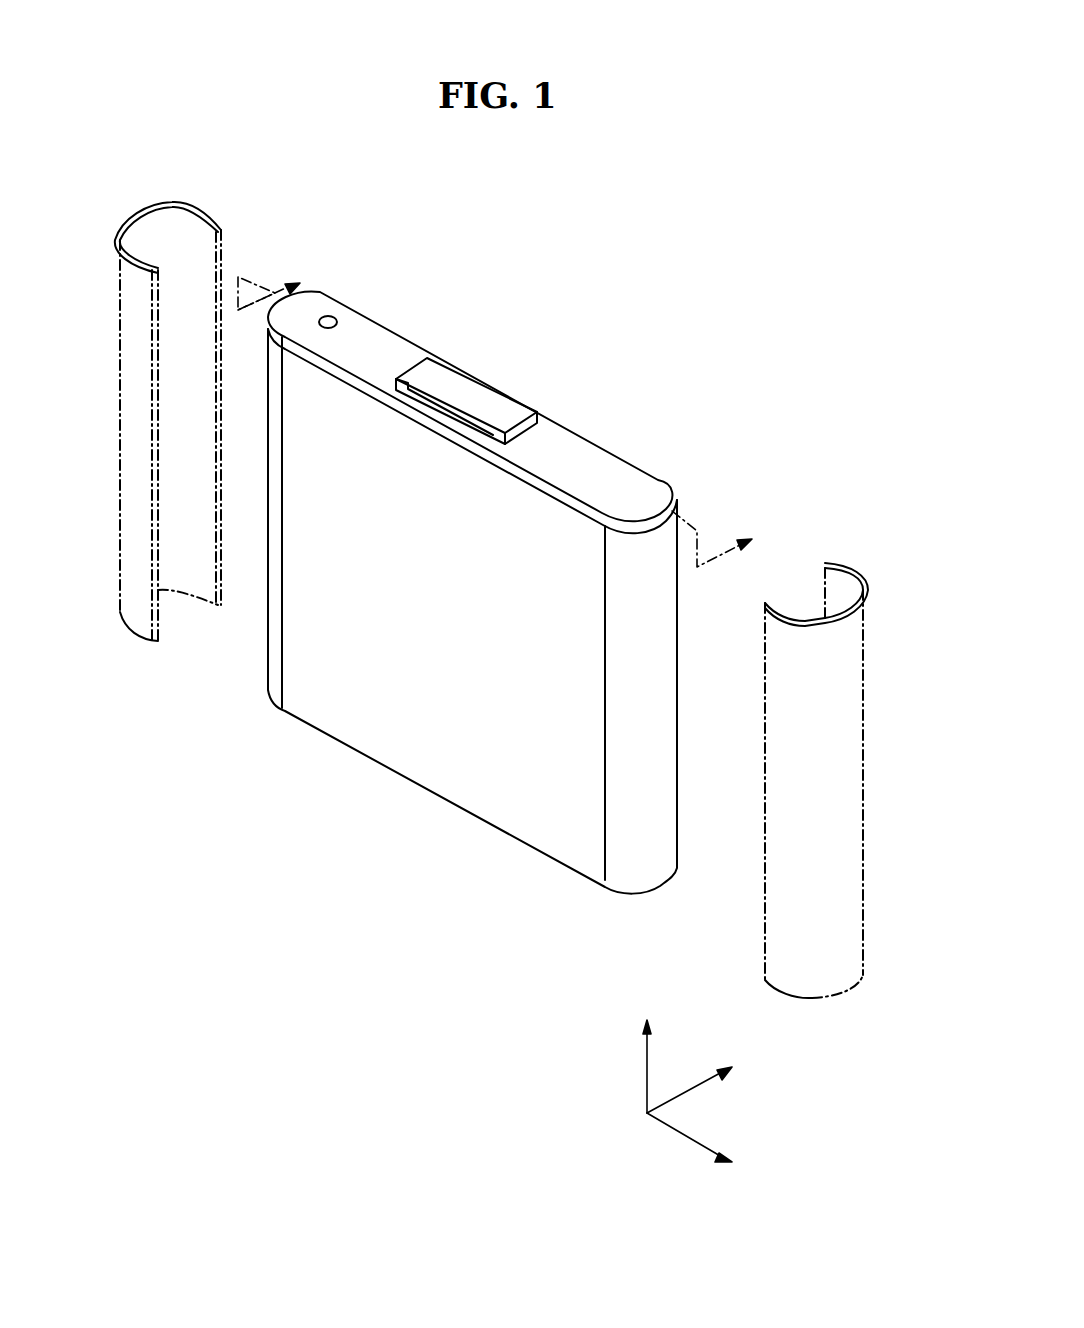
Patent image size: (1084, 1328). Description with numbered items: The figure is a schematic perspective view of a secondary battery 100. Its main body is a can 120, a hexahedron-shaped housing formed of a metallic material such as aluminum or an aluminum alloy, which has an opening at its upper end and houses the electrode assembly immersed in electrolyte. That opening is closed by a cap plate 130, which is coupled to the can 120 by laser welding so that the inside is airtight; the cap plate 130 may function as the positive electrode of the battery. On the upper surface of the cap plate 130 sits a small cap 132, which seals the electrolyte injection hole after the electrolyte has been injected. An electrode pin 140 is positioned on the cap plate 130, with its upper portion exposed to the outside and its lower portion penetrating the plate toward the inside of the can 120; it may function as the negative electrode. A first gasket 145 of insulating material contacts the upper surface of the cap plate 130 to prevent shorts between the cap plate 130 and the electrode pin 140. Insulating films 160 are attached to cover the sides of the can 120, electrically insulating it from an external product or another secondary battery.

The secondary battery 100 is at (661, 352).
The can 120 is at (456, 806).
The cap plate 130 is at (572, 447).
The cap 132 is at (335, 317).
The electrode pin 140 is at (467, 378).
The first gasket 145 is at (431, 367).
The insulating films 160 is at (205, 212).